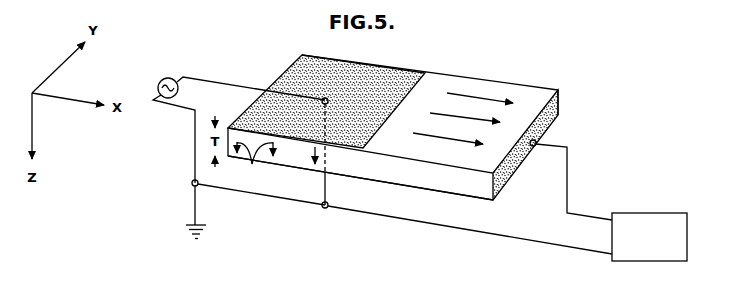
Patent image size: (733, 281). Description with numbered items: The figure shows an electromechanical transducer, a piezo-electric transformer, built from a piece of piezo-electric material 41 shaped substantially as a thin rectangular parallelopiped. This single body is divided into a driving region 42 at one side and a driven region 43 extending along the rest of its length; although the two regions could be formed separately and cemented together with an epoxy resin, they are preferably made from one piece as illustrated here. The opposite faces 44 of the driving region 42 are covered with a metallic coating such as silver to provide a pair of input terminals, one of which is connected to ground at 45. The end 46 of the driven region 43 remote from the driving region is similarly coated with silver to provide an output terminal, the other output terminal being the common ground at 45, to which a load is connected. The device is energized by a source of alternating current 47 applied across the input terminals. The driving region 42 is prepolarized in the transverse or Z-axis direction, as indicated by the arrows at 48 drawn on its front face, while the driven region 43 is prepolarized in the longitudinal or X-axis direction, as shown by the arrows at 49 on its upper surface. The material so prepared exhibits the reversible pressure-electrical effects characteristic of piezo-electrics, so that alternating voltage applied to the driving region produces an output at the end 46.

The piece of piezo-electric material 41 is at (479, 64).
The driving region 42 is at (287, 160).
The driven region 43 is at (513, 90).
The opposite faces 44 is at (376, 80).
The ground 45 is at (200, 223).
The end of the driven region 46 is at (546, 128).
The source of alternating current 47 is at (168, 78).
The arrows indicating transverse polarization 48 is at (255, 161).
The arrows indicating longitudinal polarization 49 is at (450, 93).